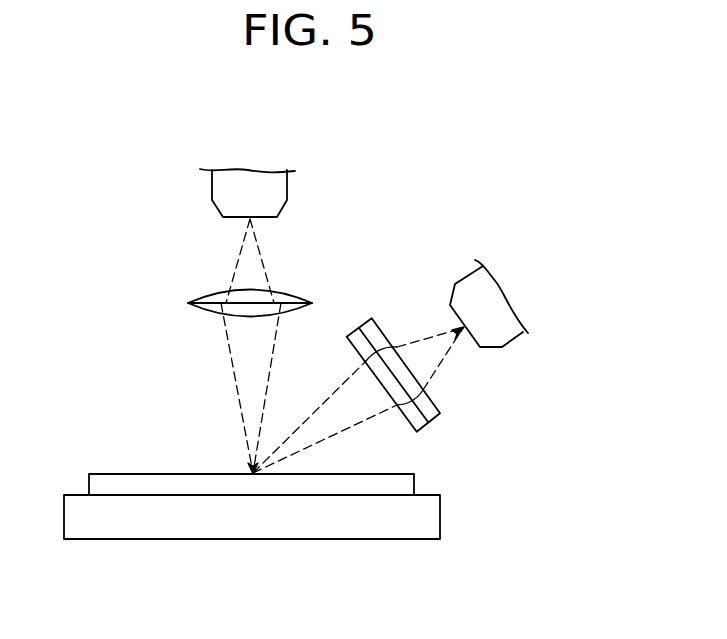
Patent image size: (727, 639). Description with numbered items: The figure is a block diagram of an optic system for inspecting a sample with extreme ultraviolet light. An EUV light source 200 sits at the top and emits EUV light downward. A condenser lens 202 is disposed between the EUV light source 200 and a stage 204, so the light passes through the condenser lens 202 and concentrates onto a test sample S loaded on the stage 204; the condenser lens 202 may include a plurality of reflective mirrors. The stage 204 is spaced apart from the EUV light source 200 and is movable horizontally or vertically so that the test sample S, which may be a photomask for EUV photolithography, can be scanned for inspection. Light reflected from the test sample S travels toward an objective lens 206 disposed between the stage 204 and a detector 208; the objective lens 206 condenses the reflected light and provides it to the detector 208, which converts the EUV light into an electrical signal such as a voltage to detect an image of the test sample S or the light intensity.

The EUV light source 200 is at (250, 180).
The condenser lens 202 is at (300, 296).
The stage 204 is at (432, 512).
The objective lens 206 is at (440, 413).
The detector 208 is at (503, 313).
The test sample S is at (405, 482).